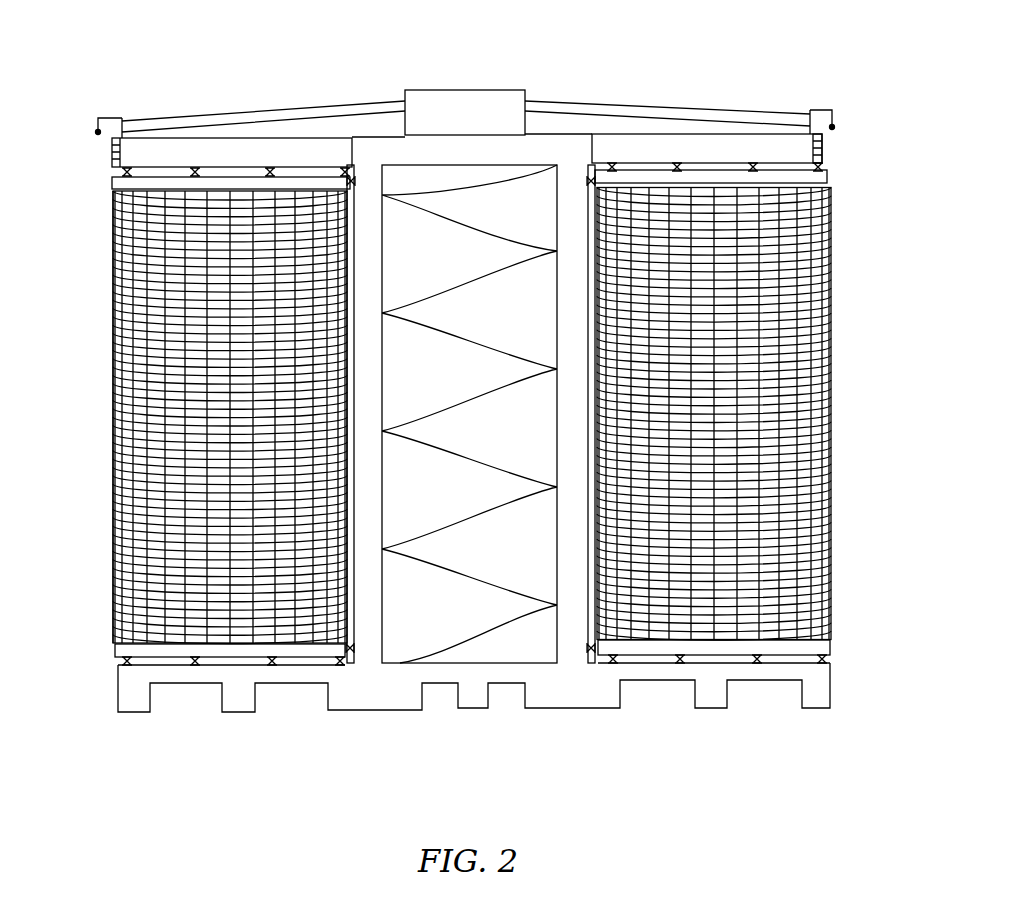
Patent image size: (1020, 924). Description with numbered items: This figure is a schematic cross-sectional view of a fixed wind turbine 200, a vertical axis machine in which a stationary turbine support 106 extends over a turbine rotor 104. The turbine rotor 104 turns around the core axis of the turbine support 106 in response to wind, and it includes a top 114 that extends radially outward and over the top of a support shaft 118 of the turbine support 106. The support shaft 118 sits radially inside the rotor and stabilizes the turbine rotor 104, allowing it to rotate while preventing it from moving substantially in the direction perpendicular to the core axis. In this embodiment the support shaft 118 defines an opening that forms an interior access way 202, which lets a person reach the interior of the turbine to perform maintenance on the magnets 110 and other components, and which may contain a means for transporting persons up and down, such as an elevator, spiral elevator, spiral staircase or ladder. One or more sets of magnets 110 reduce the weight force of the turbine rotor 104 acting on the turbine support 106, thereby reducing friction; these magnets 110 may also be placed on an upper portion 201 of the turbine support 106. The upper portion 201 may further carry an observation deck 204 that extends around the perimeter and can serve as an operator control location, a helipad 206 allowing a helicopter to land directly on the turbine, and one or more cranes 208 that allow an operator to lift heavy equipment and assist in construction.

The turbine rotor 104 is at (843, 178).
The turbine support 106 is at (370, 373).
The magnets 110 is at (197, 167).
The top 114 is at (828, 178).
The support shaft 118 is at (372, 458).
The fixed wind turbine 200 is at (97, 101).
The upper portion 201 is at (153, 150).
The interior access way 202 is at (528, 650).
The observation deck 204 is at (823, 150).
The helipad 206 is at (467, 84).
The cranes 208 is at (832, 108).